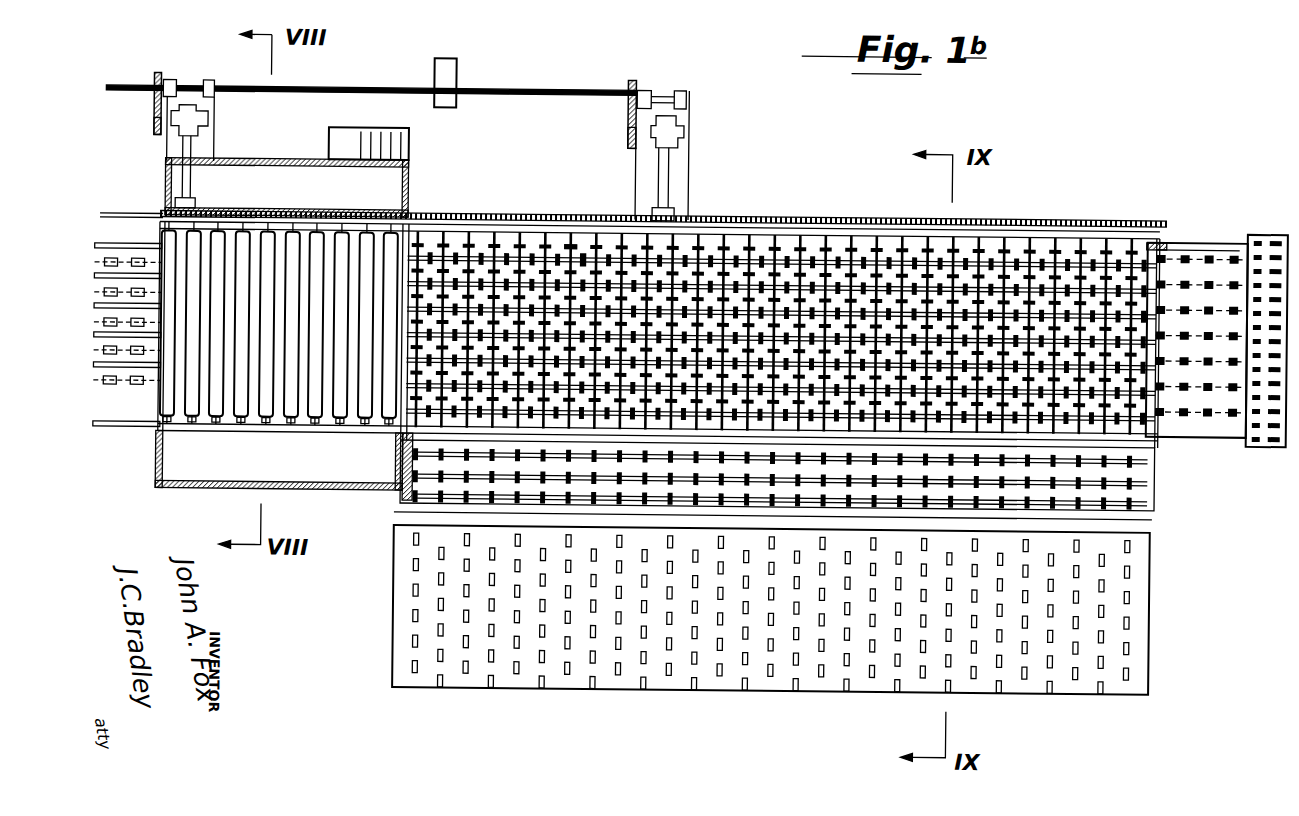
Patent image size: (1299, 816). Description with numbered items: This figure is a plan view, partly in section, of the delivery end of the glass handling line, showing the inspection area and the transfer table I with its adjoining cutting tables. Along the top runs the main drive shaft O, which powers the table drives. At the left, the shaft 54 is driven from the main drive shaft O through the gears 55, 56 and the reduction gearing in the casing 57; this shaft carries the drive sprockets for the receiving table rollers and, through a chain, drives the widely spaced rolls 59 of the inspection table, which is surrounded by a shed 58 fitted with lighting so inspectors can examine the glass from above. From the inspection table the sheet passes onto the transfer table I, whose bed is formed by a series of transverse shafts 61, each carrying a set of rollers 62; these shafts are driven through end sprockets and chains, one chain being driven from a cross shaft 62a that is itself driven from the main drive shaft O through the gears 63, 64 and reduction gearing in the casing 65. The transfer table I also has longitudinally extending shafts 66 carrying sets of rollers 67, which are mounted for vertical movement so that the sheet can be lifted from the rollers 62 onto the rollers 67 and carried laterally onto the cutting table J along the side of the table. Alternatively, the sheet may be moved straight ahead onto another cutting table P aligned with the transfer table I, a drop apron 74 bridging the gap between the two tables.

The main drive shaft O is at (518, 88).
The gear 55 is at (156, 78).
The gear 56 is at (153, 130).
The casing 57 is at (184, 120).
The shaft 54 is at (181, 184).
The shed 58 is at (246, 151).
The rolls 59 is at (318, 248).
The gear 63 is at (629, 80).
The gear 64 is at (626, 136).
The casing 65 is at (658, 125).
The cross shaft 62a is at (668, 178).
The rollers 62 is at (446, 248).
The transverse shafts 61 is at (502, 245).
The longitudinally extending shafts 66 is at (570, 244).
The rollers 67 is at (584, 250).
The transfer table I is at (787, 303).
The cutting table J is at (597, 695).
The drop apron 74 is at (1212, 430).
The cutting table P is at (1260, 222).